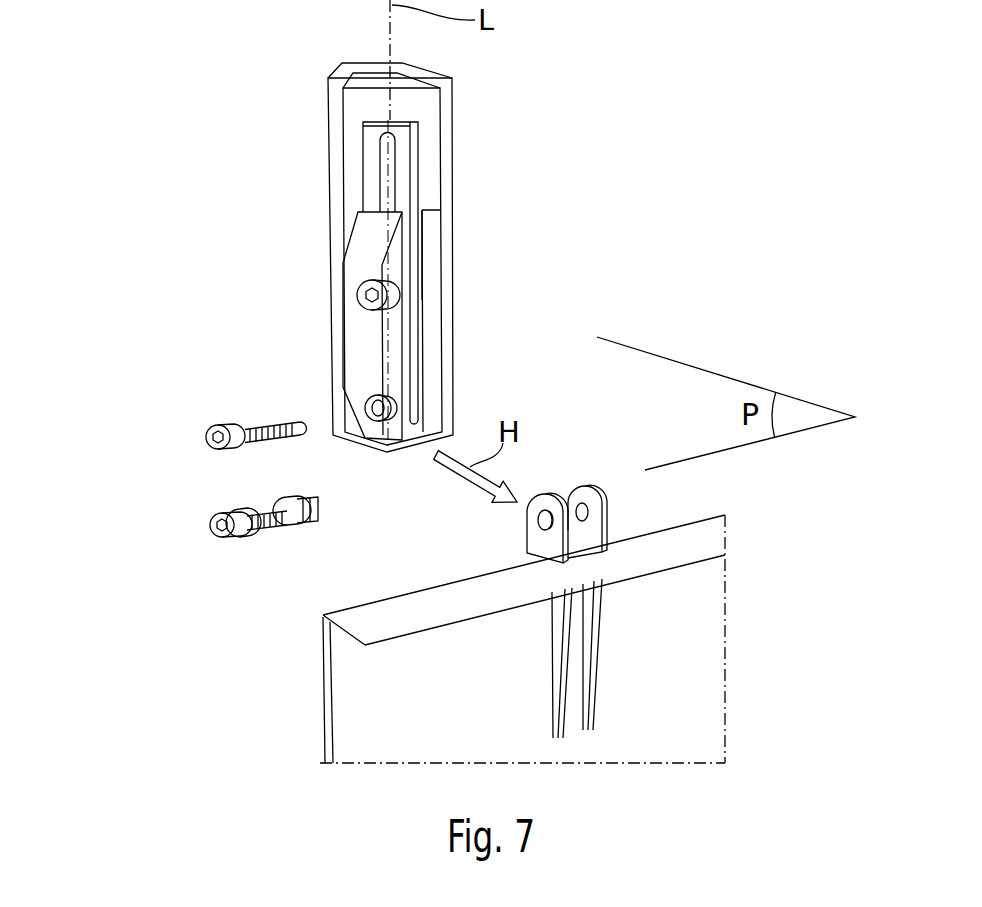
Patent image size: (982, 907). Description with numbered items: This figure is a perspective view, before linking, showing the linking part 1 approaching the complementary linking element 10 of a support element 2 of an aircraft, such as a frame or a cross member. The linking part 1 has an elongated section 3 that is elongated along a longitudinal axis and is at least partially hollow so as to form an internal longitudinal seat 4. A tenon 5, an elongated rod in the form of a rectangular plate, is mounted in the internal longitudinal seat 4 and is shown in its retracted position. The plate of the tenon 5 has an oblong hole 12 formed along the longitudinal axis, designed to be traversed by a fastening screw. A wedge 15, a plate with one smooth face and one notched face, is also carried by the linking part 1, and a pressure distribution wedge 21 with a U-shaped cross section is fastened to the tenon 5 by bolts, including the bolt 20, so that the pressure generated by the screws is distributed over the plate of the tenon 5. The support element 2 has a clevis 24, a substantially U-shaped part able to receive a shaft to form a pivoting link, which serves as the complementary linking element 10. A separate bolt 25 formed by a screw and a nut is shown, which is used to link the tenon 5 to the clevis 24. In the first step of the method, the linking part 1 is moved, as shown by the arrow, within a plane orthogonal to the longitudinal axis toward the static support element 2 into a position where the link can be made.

The linking part 1 is at (233, 178).
The support element 2 is at (387, 603).
The elongated section 3 is at (305, 108).
The internal longitudinal seat 4 is at (432, 127).
The tenon 5 is at (418, 150).
The complementary linking element 10 is at (513, 528).
The oblong hole 12 is at (388, 162).
The wedge 15 is at (433, 242).
The bolt 20 is at (190, 440).
The pressure distribution wedge 21 is at (352, 241).
The clevis 24 is at (632, 497).
The bolt 25 is at (190, 527).